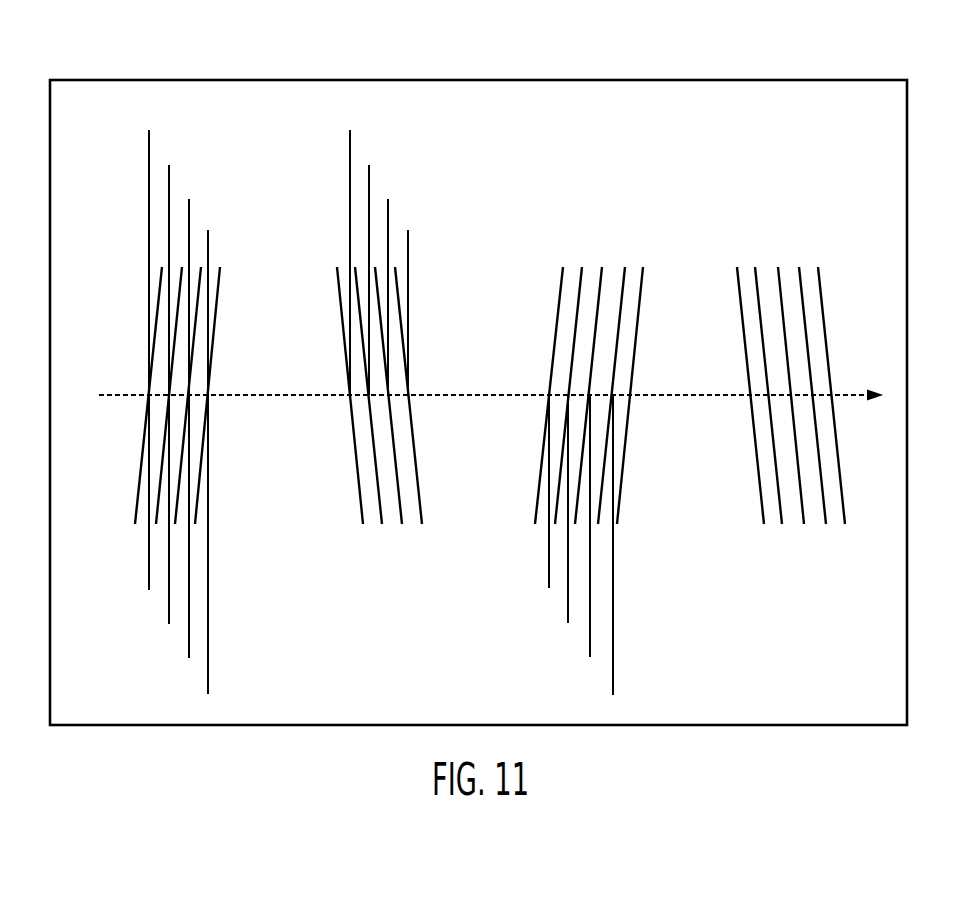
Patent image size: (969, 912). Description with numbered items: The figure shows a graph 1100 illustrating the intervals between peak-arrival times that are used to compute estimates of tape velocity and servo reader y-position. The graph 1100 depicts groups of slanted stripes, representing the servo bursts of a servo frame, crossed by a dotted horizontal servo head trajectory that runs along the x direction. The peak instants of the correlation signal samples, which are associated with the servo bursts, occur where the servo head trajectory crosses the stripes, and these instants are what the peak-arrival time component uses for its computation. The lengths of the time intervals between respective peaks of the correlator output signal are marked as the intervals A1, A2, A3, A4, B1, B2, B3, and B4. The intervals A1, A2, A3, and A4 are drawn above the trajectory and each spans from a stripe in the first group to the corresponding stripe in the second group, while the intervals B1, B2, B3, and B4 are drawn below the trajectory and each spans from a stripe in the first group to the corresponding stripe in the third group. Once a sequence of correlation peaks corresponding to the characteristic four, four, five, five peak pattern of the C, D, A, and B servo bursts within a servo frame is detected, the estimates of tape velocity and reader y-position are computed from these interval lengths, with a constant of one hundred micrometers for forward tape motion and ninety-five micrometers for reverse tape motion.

The graph 1100 is at (408, 80).
The time interval A1 is at (341, 135).
The time interval A2 is at (360, 170).
The time interval A3 is at (379, 207).
The time interval A4 is at (399, 243).
The time interval B1 is at (158, 575).
The time interval B2 is at (559, 608).
The time interval B3 is at (581, 640).
The time interval B4 is at (604, 674).